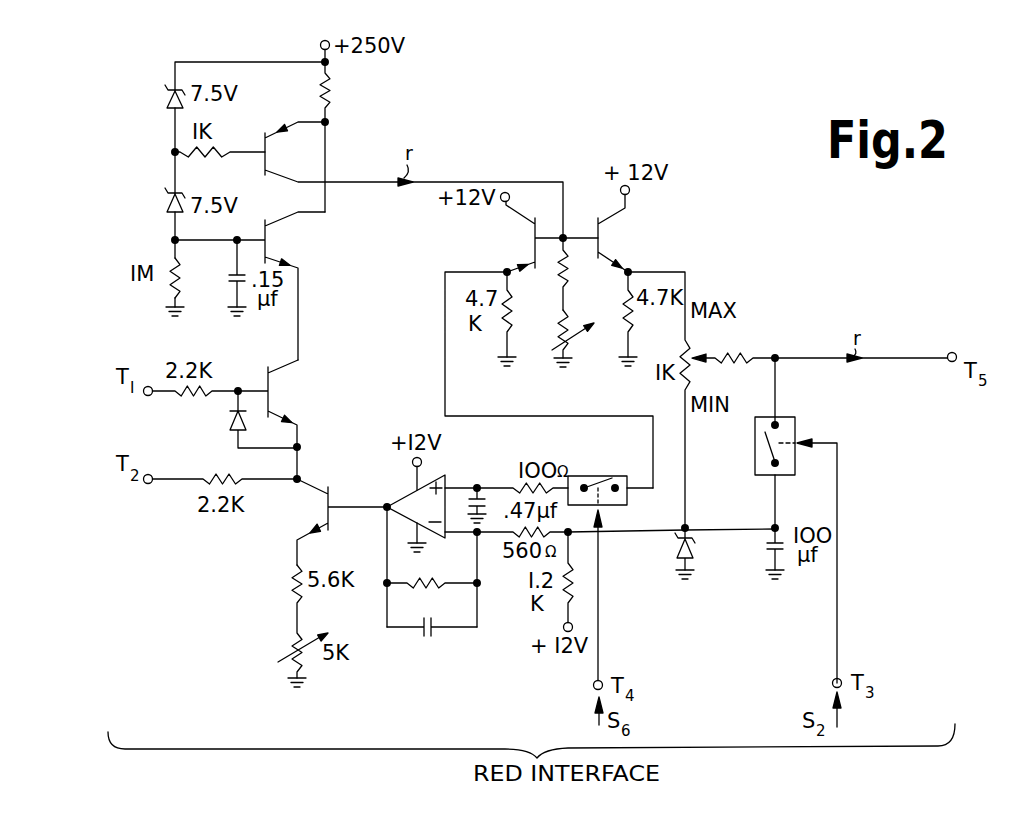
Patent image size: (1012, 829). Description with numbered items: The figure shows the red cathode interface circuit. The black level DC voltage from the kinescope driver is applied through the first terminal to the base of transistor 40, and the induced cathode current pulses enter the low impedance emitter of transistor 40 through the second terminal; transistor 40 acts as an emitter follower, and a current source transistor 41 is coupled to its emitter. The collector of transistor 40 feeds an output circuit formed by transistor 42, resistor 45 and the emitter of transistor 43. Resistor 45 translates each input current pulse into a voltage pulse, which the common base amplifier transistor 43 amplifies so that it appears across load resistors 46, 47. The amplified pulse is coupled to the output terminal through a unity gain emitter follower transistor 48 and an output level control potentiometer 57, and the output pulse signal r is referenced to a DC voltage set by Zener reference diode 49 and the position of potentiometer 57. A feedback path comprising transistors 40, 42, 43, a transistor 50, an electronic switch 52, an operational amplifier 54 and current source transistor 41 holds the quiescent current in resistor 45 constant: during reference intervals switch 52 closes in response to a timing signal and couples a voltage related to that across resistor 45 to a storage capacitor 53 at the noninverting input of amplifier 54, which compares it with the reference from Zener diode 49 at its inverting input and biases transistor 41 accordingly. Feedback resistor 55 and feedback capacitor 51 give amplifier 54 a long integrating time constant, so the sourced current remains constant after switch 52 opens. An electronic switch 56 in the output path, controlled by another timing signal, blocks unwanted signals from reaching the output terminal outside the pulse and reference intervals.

The transistor 40 is at (307, 399).
The current source transistor 41 is at (317, 516).
The transistor 42 is at (306, 253).
The transistor 43 is at (308, 165).
The resistor 45 is at (330, 79).
The resistor 46 is at (552, 330).
The resistor 47 is at (585, 274).
The emitter follower transistor 48 is at (640, 253).
The Zener reference diode 49 is at (678, 544).
The transistor 50 is at (527, 253).
The feedback capacitor 51 is at (429, 640).
The electronic switch 52 is at (623, 476).
The storage capacitor 53 is at (484, 486).
The operational amplifier 54 is at (397, 501).
The feedback resistor 55 is at (438, 580).
The electronic switch 56 is at (796, 437).
The output level control potentiometer 57 is at (750, 346).